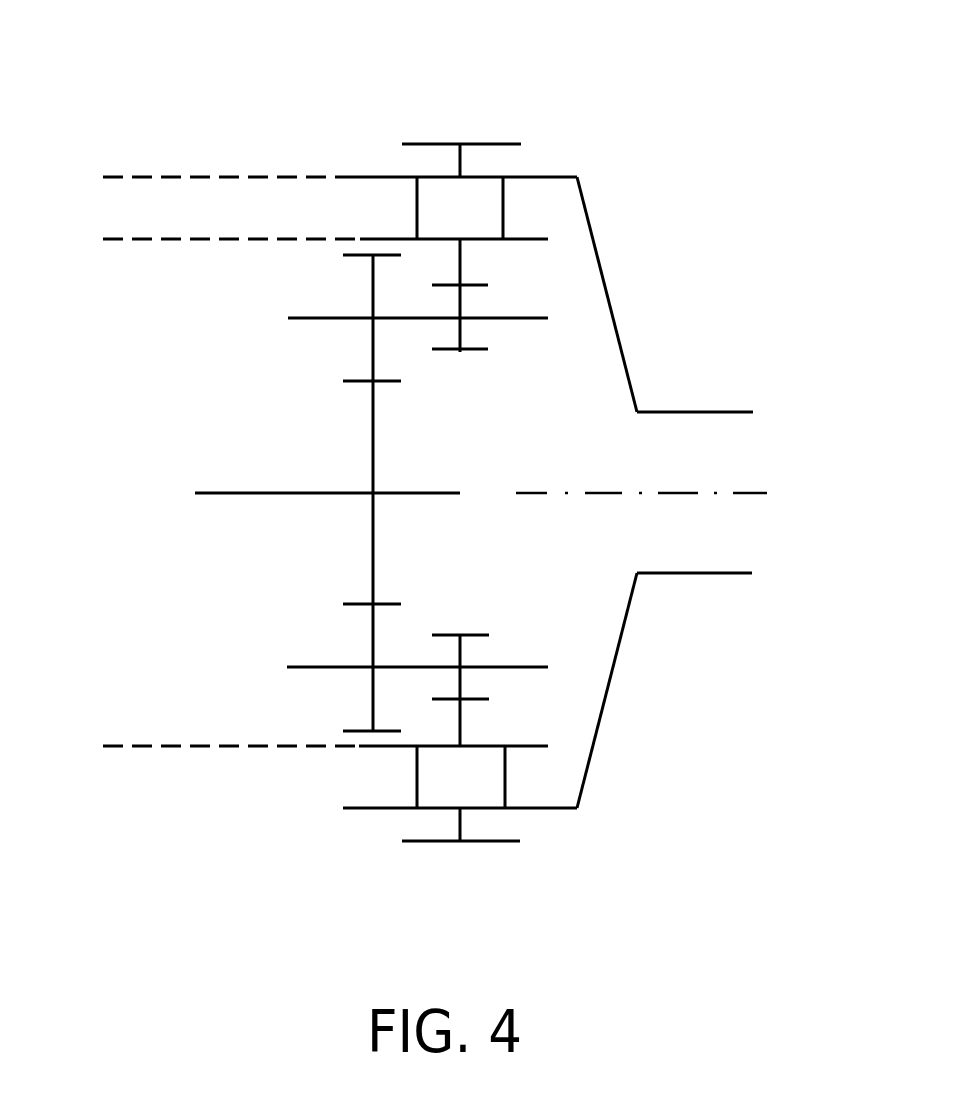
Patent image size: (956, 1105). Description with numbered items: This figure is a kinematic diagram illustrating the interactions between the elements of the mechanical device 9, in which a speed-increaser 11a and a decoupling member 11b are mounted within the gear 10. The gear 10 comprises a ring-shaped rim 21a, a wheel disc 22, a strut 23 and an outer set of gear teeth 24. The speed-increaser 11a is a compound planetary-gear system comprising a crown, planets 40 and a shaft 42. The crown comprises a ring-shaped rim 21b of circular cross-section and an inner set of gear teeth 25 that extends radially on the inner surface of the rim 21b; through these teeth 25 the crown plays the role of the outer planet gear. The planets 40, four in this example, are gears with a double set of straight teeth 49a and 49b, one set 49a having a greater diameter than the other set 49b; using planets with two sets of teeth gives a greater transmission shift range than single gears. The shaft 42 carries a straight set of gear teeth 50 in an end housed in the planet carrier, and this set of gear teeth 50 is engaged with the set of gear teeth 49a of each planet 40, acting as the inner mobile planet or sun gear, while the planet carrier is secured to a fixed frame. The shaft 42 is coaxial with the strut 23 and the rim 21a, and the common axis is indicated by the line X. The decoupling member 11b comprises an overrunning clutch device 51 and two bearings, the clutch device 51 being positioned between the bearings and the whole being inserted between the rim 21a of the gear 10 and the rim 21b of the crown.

The mechanical device 9 is at (178, 100).
The gear 10 is at (363, 811).
The speed-increaser 11a is at (103, 240).
The decoupling member 11b is at (103, 177).
The ring-shaped rim 21a is at (565, 812).
The ring-shaped rim 21b is at (548, 240).
The wheel disc 22 is at (613, 683).
The strut 23 is at (740, 575).
The outer set of gear teeth 24 is at (495, 843).
The inner set of gear teeth 25 is at (488, 283).
The planet gears 40 is at (522, 667).
The shaft 42 is at (430, 492).
The set of gear teeth 49a is at (385, 381).
The set of gear teeth 49b is at (488, 289).
The set of gear teeth 50 is at (383, 383).
The overrunning clutch device 51 is at (486, 186).
The axis X is at (757, 492).